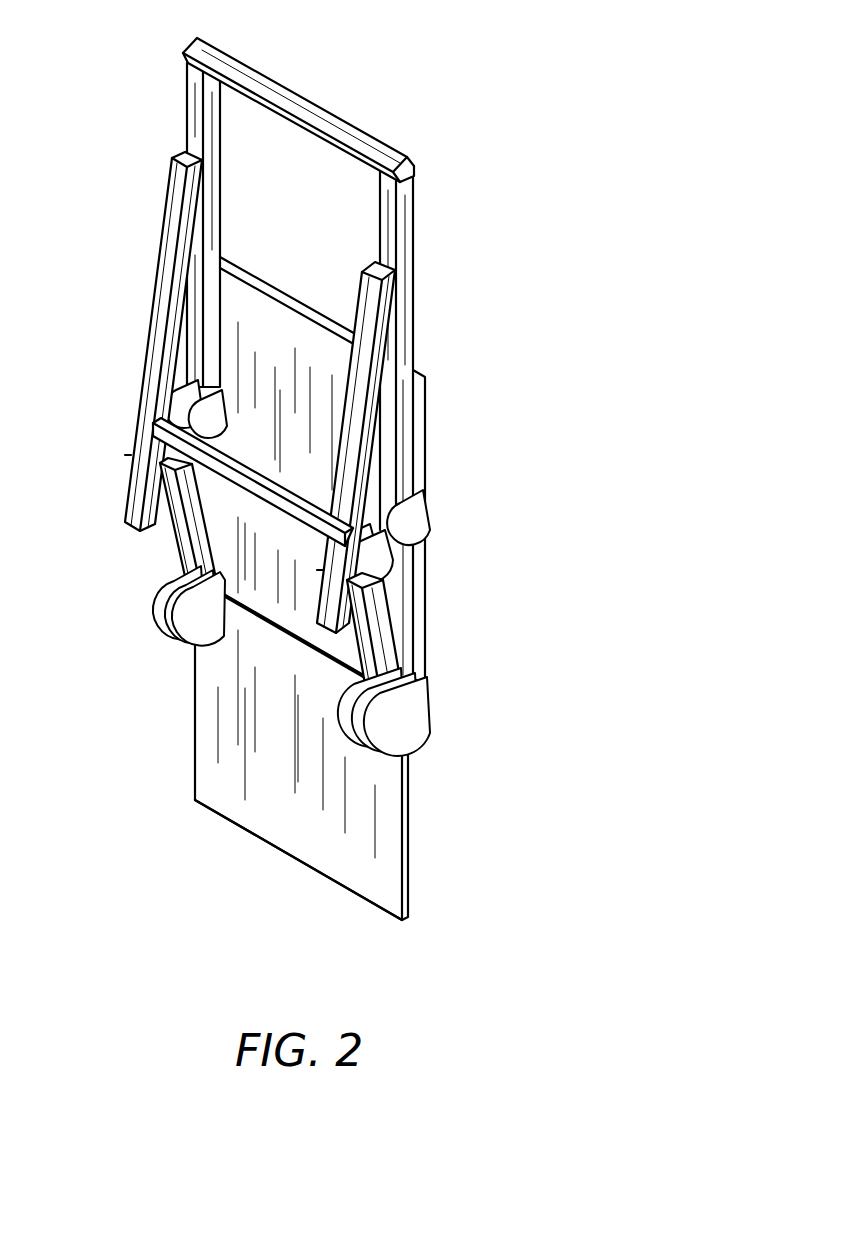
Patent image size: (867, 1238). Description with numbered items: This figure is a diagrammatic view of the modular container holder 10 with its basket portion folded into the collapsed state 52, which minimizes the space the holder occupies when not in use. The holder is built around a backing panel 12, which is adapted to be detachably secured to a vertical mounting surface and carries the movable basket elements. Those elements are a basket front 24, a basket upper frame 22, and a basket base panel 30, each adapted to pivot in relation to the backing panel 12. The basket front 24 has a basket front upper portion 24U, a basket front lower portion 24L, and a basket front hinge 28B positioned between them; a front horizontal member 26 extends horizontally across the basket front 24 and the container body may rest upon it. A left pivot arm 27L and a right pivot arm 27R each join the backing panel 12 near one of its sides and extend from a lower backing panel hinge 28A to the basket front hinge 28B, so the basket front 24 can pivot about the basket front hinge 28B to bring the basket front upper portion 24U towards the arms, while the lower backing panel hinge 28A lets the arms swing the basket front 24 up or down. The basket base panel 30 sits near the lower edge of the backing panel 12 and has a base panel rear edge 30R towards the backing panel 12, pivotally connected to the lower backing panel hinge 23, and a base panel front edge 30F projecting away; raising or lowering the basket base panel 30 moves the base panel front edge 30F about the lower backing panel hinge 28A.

The modular container holder 10 is at (182, 920).
The backing panel 12 is at (423, 453).
The basket upper frame 22 is at (367, 133).
The lower backing panel hinge 23 is at (420, 517).
The basket front 24 is at (163, 258).
The basket front upper portion 24U is at (187, 152).
The basket front lower portion 24L is at (147, 528).
The front horizontal member 26 is at (150, 442).
The left pivot arm 27L is at (173, 562).
The right pivot arm 27R is at (385, 625).
The lower backing panel hinge 28A is at (410, 712).
The basket front hinge 28B is at (385, 556).
The basket base panel 30 is at (405, 826).
The base panel rear edge 30R is at (277, 625).
The base panel front edge 30F is at (320, 876).
The collapsed state 52 is at (462, 152).